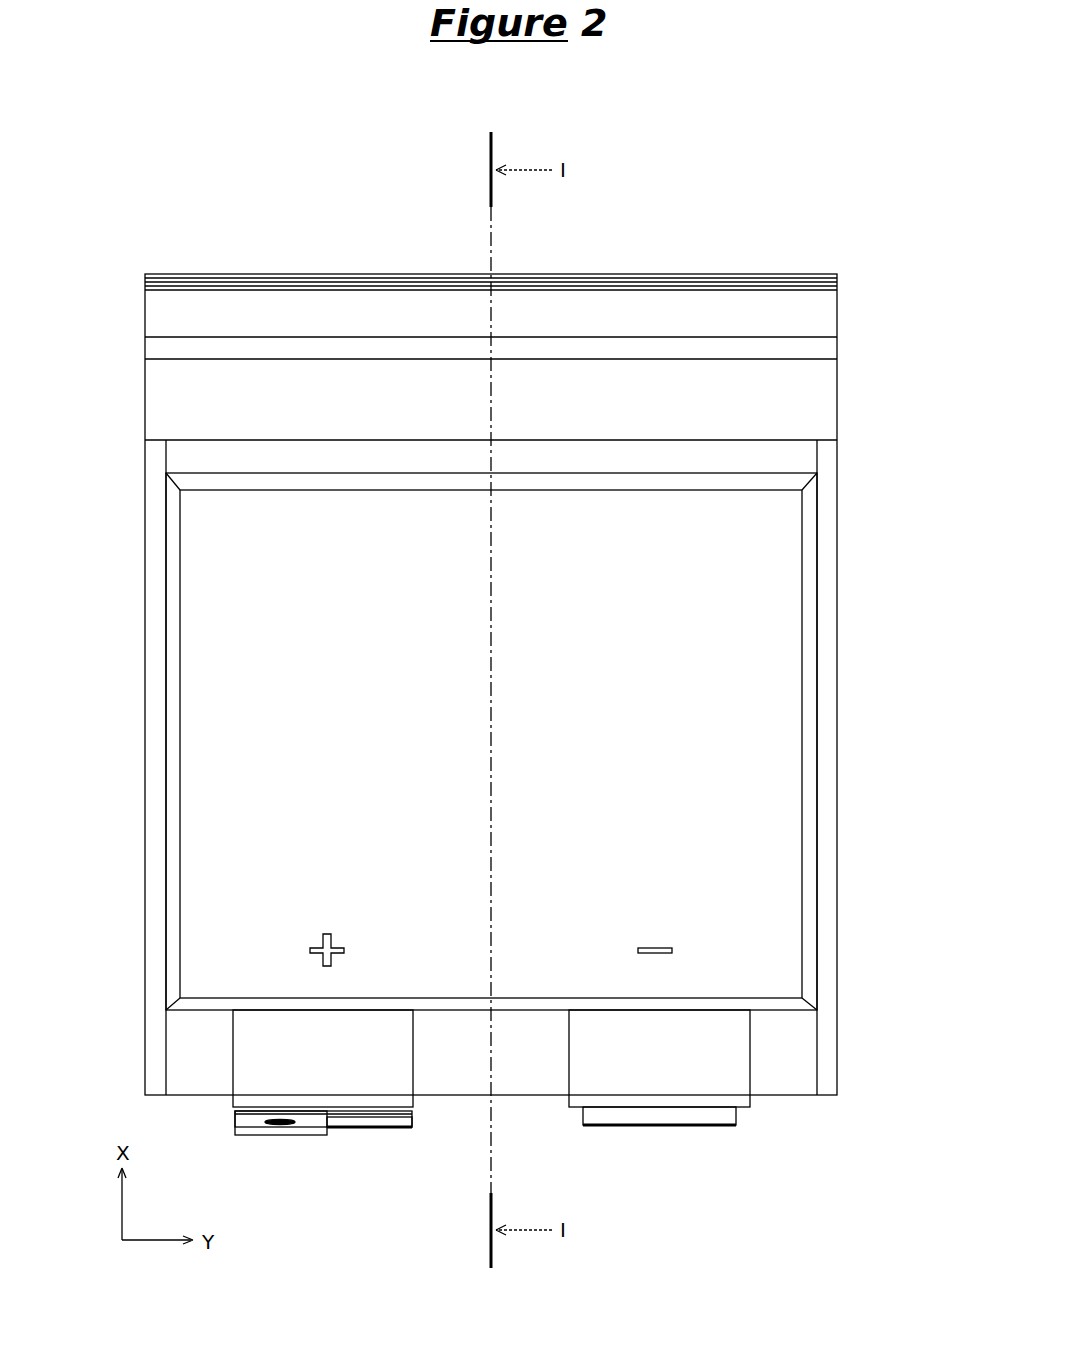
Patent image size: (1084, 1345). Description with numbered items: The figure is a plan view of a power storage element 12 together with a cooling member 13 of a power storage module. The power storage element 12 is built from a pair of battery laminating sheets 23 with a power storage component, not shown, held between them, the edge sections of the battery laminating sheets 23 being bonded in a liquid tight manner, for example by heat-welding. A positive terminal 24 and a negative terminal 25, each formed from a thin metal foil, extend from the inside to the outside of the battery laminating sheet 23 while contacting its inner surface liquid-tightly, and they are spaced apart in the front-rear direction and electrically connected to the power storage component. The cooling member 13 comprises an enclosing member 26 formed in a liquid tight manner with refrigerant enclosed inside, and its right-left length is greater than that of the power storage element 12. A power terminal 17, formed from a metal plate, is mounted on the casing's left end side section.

The power storage element 12 is at (778, 568).
The cooling member 13 is at (820, 393).
The power terminal 17 is at (300, 1135).
The battery laminating sheet 23 is at (778, 685).
The positive terminal 24 is at (373, 1127).
The negative terminal 25 is at (650, 1091).
The enclosing member 26 is at (188, 400).